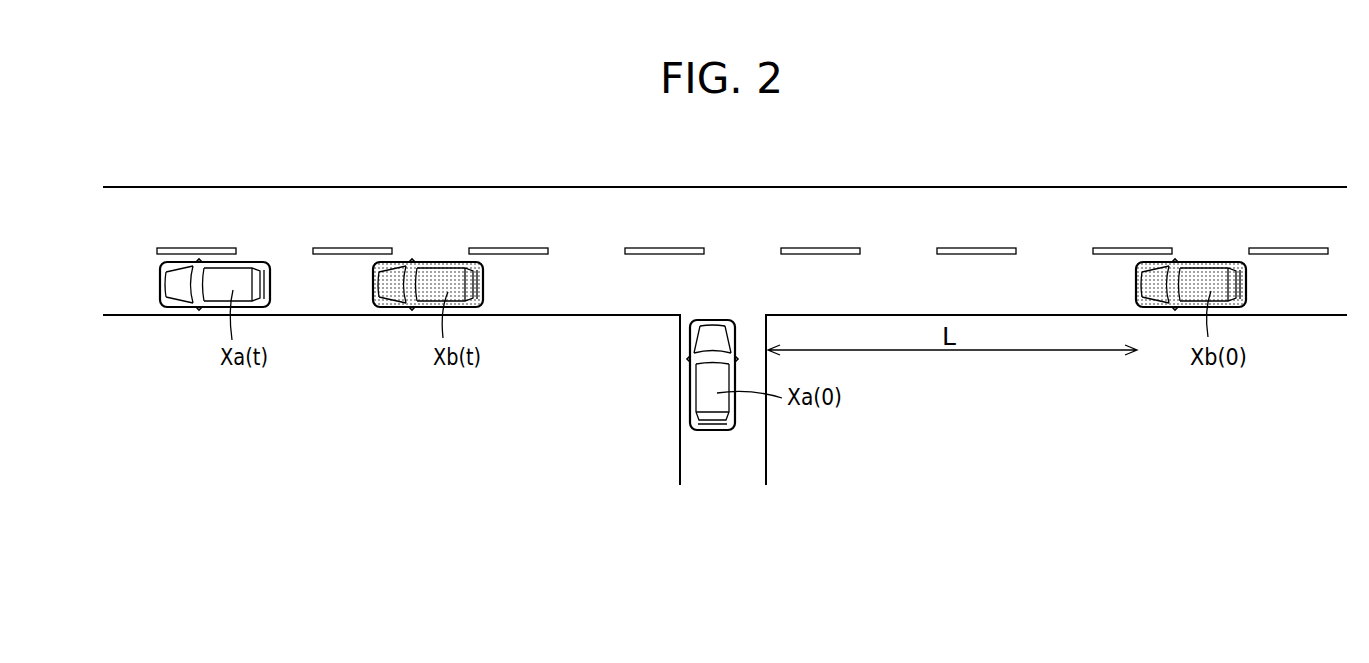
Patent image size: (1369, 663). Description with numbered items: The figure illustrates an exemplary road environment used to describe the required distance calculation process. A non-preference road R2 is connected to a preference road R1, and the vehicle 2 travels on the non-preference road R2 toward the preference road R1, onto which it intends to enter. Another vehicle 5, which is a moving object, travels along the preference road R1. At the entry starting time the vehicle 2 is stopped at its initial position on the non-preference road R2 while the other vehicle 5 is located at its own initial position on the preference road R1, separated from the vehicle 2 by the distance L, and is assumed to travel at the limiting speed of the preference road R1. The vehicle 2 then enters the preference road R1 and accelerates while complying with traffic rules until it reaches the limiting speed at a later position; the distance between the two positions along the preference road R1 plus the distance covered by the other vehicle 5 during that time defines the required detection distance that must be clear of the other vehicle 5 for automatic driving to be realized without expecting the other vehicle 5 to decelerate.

The vehicle 2 is at (179, 307).
The other vehicle 5 is at (393, 306).
The preference road R1 is at (1246, 200).
The non-preference road R2 is at (697, 461).